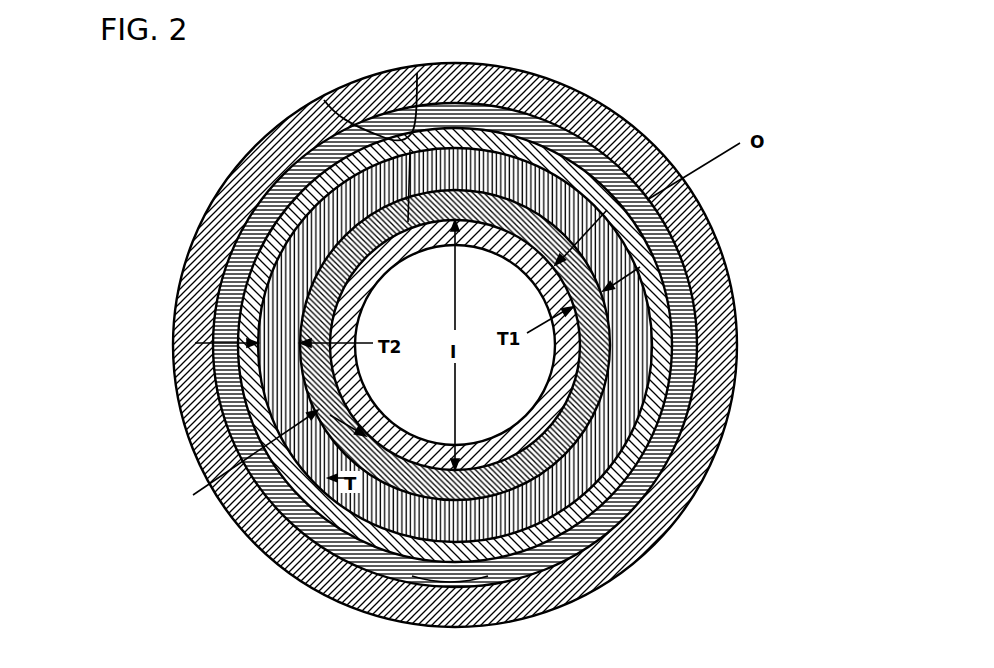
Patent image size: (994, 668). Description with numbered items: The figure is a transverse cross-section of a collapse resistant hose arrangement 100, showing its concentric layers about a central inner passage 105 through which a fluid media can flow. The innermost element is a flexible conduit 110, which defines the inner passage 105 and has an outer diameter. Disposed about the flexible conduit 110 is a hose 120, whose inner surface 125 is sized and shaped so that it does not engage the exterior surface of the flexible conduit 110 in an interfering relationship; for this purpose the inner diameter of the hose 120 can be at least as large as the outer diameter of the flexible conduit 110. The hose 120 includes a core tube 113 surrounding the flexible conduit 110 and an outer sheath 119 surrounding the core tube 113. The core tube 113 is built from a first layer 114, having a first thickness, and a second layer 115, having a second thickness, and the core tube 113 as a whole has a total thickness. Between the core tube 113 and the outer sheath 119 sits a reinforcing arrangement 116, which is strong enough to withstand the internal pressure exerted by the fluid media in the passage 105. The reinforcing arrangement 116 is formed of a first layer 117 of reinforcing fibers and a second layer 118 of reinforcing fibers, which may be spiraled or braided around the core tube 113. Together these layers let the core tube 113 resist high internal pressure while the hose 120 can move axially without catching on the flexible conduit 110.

The collapse resistant hose arrangement 100 is at (661, 117).
The inner passage 105 is at (455, 345).
The flexible conduit 110 is at (500, 225).
The core tube 113 is at (553, 432).
The first layer 114 is at (603, 405).
The second layer 115 is at (640, 300).
The reinforcing arrangement 116 is at (293, 167).
The first layer of reinforcing fibers 117 is at (228, 296).
The second layer of reinforcing fibers 118 is at (305, 137).
The outer sheath 119 is at (180, 405).
The hose 120 is at (324, 100).
The inner surface 125 is at (502, 462).